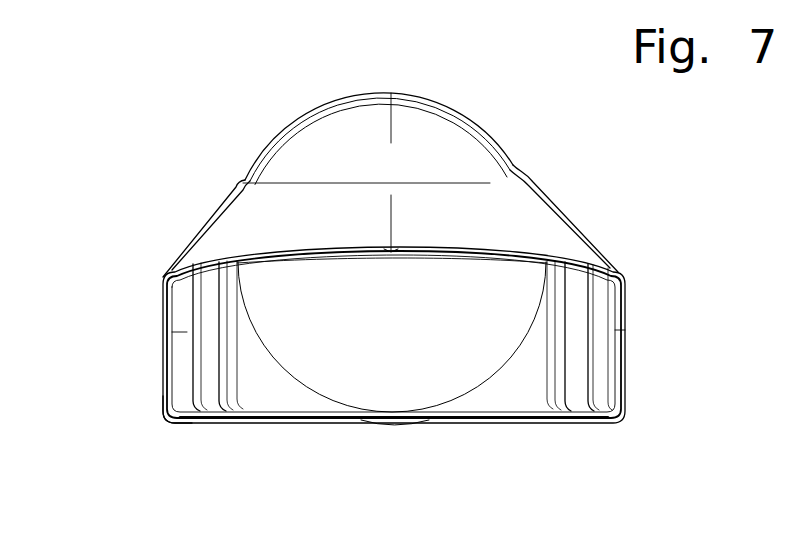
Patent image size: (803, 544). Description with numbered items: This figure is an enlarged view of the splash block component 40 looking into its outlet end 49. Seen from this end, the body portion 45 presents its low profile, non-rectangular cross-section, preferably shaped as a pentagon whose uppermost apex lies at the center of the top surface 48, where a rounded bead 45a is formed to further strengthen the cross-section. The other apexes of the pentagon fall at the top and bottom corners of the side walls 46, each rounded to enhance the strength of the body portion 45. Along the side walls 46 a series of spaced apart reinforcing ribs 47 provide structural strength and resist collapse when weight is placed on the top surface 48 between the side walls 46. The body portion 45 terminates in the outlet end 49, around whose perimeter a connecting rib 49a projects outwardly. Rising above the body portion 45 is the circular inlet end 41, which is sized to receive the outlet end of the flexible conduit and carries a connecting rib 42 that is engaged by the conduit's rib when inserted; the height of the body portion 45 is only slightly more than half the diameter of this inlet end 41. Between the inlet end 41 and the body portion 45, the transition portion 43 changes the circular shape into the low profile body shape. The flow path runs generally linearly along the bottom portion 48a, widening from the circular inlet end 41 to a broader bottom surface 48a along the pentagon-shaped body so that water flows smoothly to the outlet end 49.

The splash block component 40 is at (194, 87).
The inlet end 41 is at (370, 93).
The connecting rib 42 is at (520, 166).
The transition portion 43 is at (275, 392).
The body portion 45 is at (163, 310).
The rounded bead 45a is at (391, 248).
The side walls 46 is at (625, 365).
The reinforcing ribs 47 is at (590, 300).
The top surface 48 is at (455, 258).
The bottom portion 48a is at (334, 418).
The outlet end 49 is at (497, 422).
The connecting rib 49a is at (163, 390).